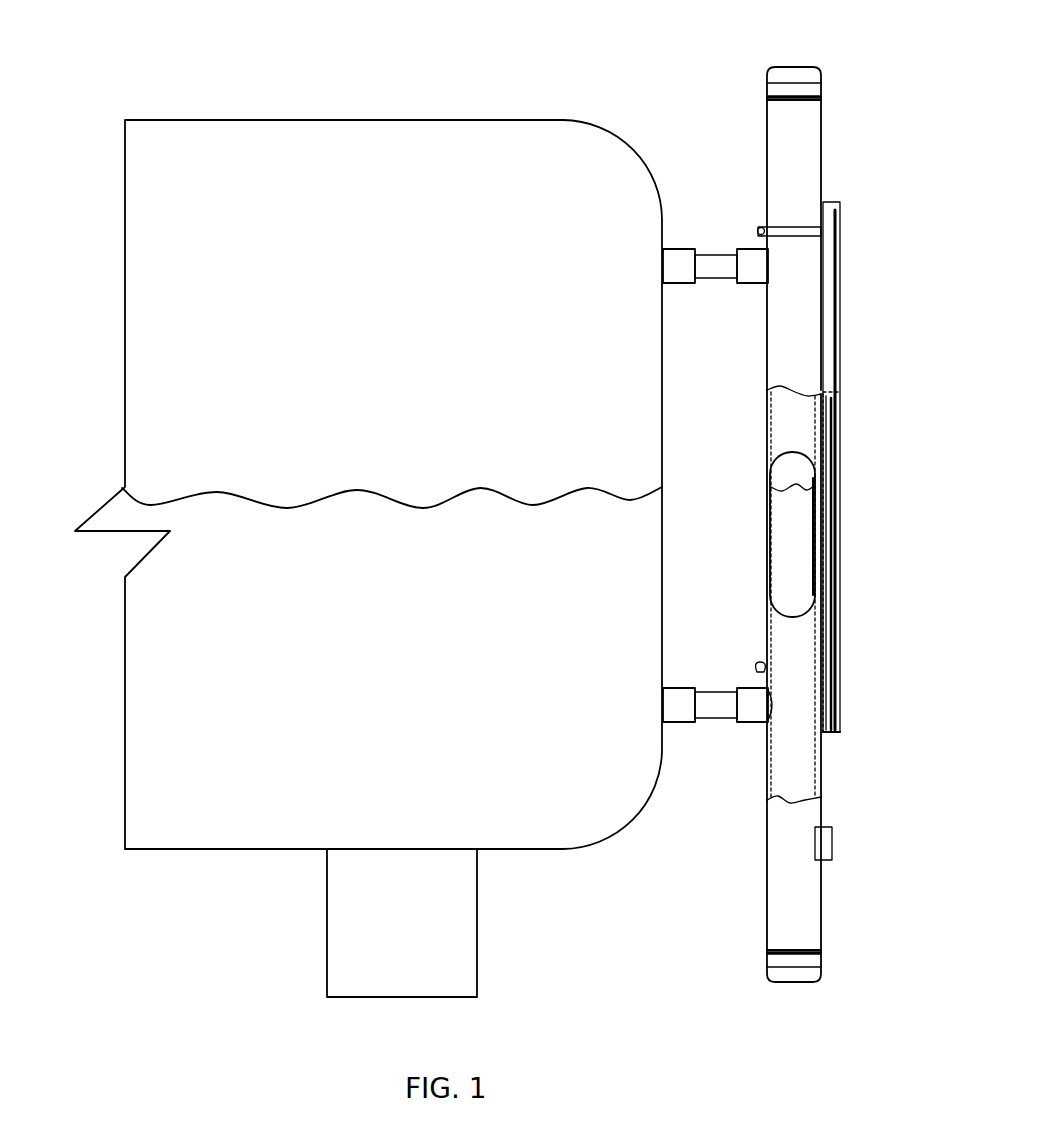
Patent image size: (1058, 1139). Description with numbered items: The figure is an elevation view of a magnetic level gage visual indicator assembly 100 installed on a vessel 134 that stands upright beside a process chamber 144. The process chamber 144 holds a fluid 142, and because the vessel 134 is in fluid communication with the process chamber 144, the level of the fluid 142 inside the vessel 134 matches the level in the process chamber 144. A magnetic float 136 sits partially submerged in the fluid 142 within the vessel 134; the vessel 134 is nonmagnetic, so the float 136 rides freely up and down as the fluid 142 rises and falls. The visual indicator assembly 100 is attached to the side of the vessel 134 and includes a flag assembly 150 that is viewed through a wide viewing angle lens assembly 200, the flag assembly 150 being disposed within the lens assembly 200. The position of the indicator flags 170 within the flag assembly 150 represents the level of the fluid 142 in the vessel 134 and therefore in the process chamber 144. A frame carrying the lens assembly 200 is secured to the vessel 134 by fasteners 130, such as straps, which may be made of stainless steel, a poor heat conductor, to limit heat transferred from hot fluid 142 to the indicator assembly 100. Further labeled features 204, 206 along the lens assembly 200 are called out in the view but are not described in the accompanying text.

The visual indicator assembly 100 is at (501, 505).
The fasteners 130 is at (790, 230).
The vessel 134 is at (778, 900).
The magnetic float 136 is at (790, 450).
The fluid 142 is at (242, 525).
The process chamber 144 is at (393, 118).
The flag assembly 150 is at (857, 256).
The indicator flags 170 is at (856, 395).
The lens assembly 200 is at (871, 448).
The rail 204 is at (859, 195).
The rail lower end 206 is at (849, 756).